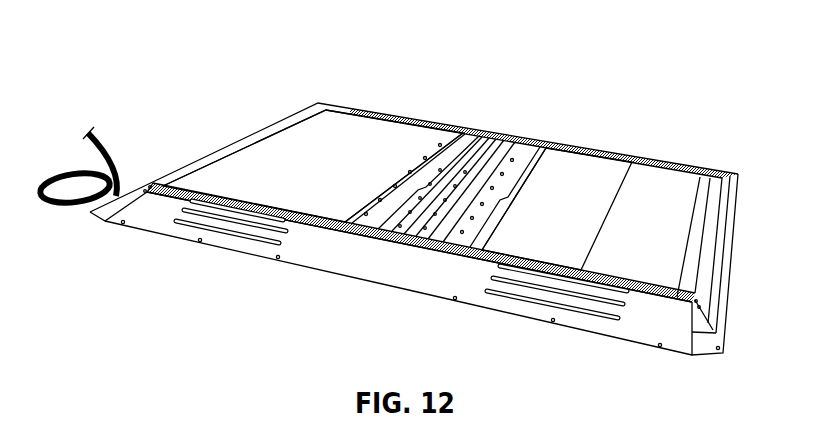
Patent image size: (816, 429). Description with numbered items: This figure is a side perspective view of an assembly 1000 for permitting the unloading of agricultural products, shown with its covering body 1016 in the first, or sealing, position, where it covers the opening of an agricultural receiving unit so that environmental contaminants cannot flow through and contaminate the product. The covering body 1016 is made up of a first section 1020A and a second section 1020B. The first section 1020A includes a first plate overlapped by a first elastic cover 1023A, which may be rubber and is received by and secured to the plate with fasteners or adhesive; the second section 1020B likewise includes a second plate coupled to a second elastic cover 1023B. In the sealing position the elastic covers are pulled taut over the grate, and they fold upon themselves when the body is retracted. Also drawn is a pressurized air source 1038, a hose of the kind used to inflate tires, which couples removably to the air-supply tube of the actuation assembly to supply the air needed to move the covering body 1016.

The assembly 1000 is at (653, 64).
The covering body 1016 is at (486, 70).
The first section 1020A is at (526, 148).
The second section 1020B is at (463, 133).
The first elastic cover 1023A is at (568, 168).
The second elastic cover 1023B is at (404, 140).
The pressurized air source 1038 is at (112, 153).